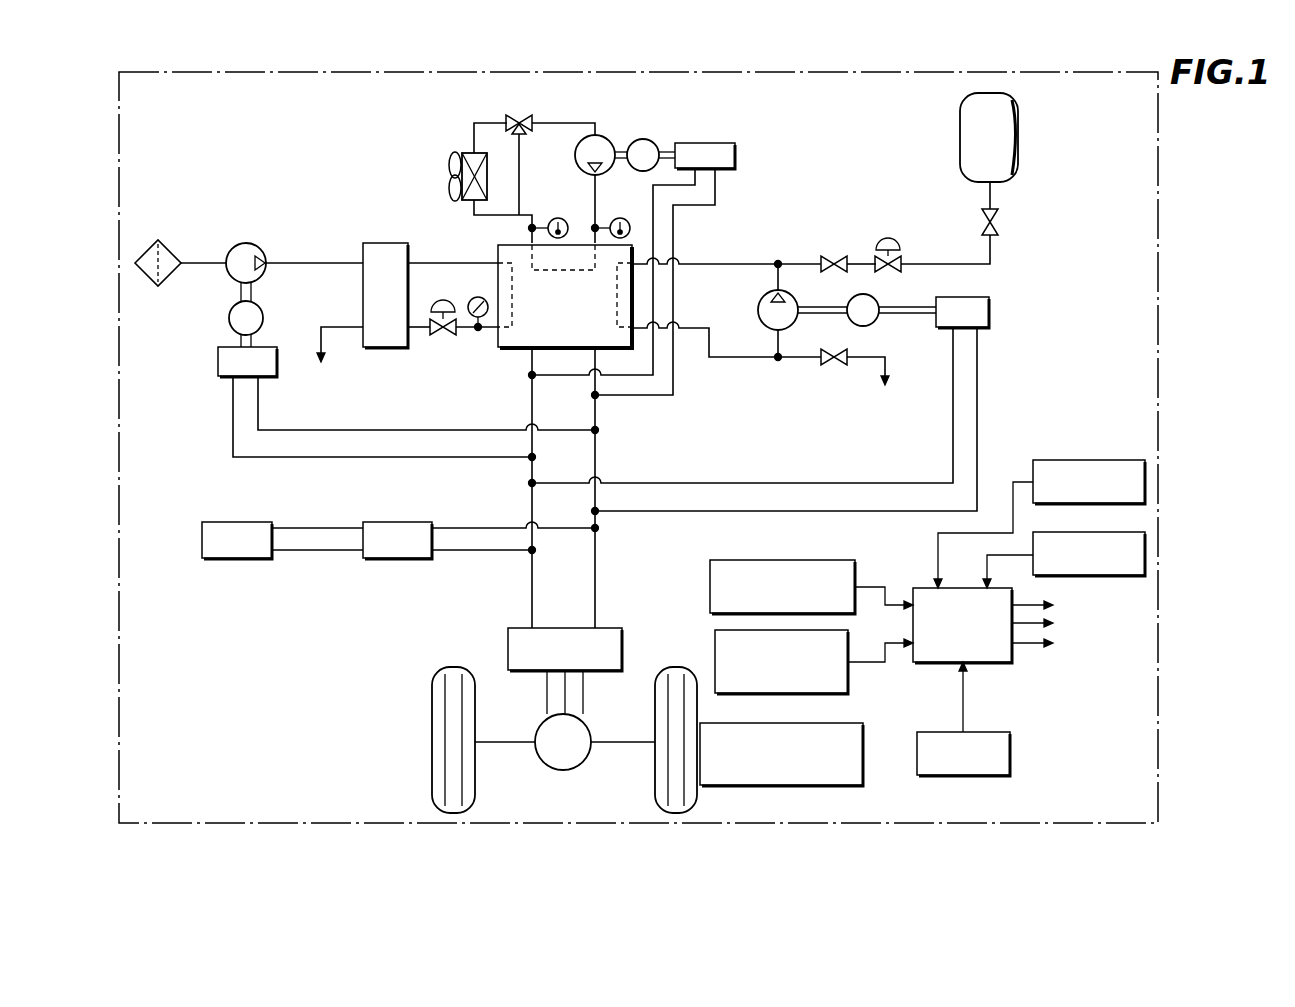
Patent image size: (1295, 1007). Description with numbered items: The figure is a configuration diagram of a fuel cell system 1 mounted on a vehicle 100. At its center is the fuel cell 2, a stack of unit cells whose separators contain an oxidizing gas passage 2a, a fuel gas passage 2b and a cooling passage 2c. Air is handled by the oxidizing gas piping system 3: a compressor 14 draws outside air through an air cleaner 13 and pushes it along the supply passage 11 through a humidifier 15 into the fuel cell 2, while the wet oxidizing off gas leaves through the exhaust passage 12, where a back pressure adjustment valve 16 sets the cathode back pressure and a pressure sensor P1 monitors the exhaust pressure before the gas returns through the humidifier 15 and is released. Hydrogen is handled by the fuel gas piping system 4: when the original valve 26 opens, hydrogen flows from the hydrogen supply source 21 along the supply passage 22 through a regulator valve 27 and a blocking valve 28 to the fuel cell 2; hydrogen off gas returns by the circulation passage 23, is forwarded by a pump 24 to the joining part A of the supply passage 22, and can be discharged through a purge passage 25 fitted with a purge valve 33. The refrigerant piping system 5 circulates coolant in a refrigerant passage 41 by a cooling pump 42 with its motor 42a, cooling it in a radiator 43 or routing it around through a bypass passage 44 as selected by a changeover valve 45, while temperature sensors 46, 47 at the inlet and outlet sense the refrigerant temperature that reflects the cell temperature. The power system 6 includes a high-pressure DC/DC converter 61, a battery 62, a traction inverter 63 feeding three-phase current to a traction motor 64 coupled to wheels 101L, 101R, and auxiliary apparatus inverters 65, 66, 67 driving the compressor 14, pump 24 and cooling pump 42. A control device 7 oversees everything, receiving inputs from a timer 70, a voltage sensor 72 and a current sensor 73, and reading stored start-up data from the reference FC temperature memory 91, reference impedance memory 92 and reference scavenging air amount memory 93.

The fuel cell system 1 is at (1158, 192).
The fuel cell 2 is at (505, 350).
The oxidizing gas passage 2a is at (518, 318).
The fuel gas passage 2b is at (613, 288).
The cooling passage 2c is at (558, 276).
The oxidizing gas piping system 3 is at (297, 225).
The fuel gas piping system 4 is at (901, 215).
The refrigerant piping system 5 is at (432, 115).
The power system 6 is at (636, 455).
The control device 7 is at (918, 588).
The supply passage 11 is at (438, 258).
The exhaust passage 12 is at (478, 338).
The air cleaner 13 is at (175, 250).
The compressor 14 is at (246, 243).
The humidifier 15 is at (385, 350).
The back pressure adjustment valve 16 is at (440, 340).
The hydrogen supply source 21 is at (1018, 135).
The supply passage 22 is at (990, 245).
The circulation passage 23 is at (753, 360).
The pump 24 is at (760, 300).
The purge passage 25 is at (890, 355).
The original valve 26 is at (1000, 215).
The regulator valve 27 is at (903, 256).
The blocking valve 28 is at (828, 250).
The purge valve 33 is at (830, 367).
The refrigerant passage 41 is at (577, 123).
The cooling pump 42 is at (610, 140).
The coolant pump motor 42a is at (655, 140).
The radiator 43 is at (452, 168).
The bypass passage 44 is at (529, 170).
The changeover valve 45 is at (524, 112).
The temperature sensor 46 is at (620, 218).
The temperature sensor 47 is at (558, 218).
The high-pressure DC/DC converter 61 is at (395, 520).
The battery 62 is at (240, 520).
The traction inverter 63 is at (622, 634).
The traction motor 64 is at (590, 730).
The auxiliary apparatus inverter 65 is at (218, 362).
The auxiliary apparatus inverter 66 is at (992, 310).
The auxiliary apparatus inverter 67 is at (735, 153).
The timer 70 is at (1000, 730).
The voltage sensor 72 is at (1095, 575).
The current sensor 73 is at (1080, 460).
The reference FC temperature memory 91 is at (710, 586).
The reference impedance memory 92 is at (848, 675).
The reference scavenging air amount memory 93 is at (863, 770).
The vehicle 100 is at (500, 762).
The wheel 101R is at (432, 735).
The wheel 101L is at (660, 760).
The joining part A is at (780, 254).
The pressure sensor P1 is at (478, 295).